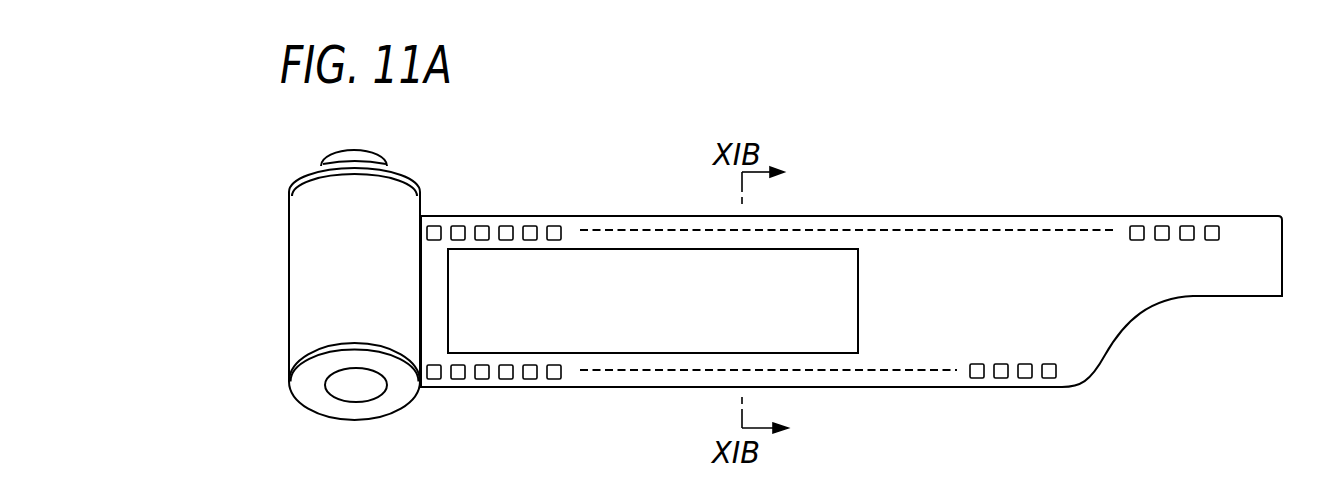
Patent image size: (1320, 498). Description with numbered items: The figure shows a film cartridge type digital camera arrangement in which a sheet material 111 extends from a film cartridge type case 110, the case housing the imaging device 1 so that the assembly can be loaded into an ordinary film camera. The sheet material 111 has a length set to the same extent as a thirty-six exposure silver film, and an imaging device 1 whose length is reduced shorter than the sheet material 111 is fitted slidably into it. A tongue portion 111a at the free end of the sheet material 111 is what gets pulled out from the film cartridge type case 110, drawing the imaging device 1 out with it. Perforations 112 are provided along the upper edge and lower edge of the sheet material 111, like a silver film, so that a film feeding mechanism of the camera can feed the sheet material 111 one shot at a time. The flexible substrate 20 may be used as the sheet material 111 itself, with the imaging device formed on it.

The imaging device 1 is at (585, 278).
The flexible substrate 20 is at (435, 277).
The film cartridge type case 110 is at (302, 228).
The sheet material 111 is at (957, 330).
The tongue portion 111a is at (1247, 285).
The perforations 112 is at (946, 235).